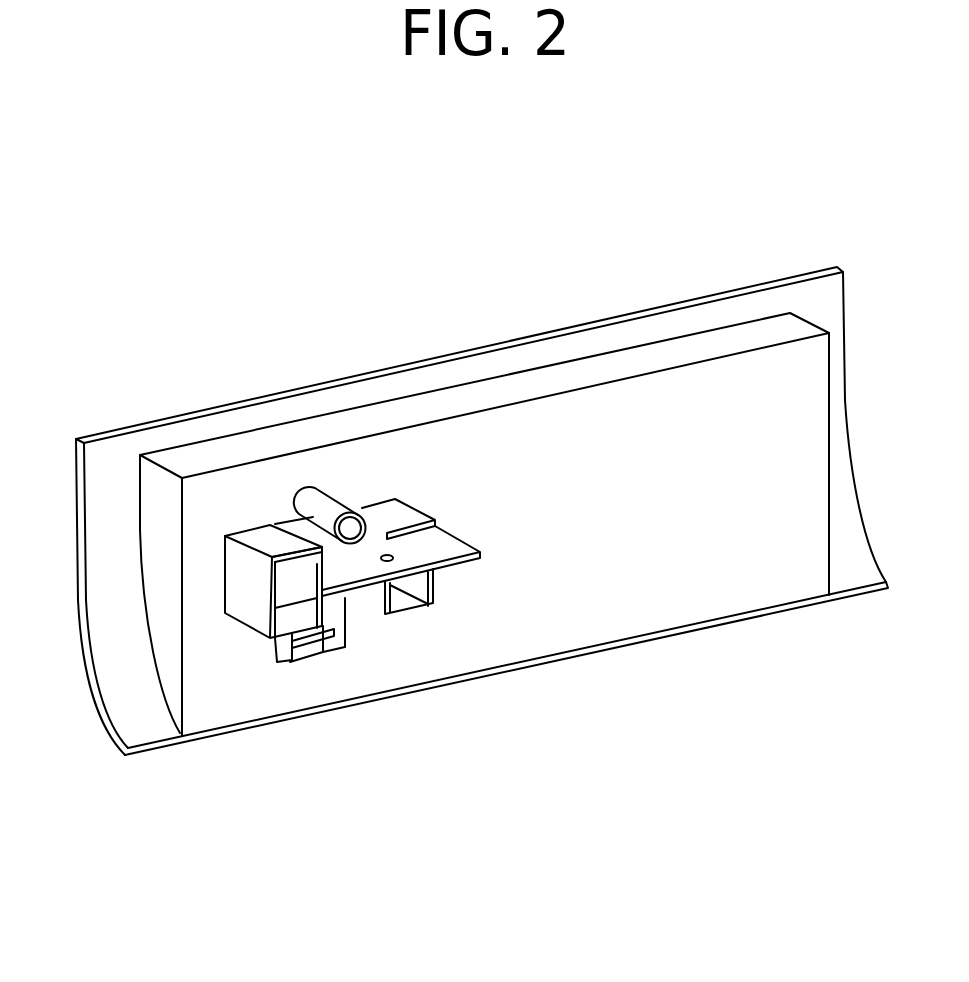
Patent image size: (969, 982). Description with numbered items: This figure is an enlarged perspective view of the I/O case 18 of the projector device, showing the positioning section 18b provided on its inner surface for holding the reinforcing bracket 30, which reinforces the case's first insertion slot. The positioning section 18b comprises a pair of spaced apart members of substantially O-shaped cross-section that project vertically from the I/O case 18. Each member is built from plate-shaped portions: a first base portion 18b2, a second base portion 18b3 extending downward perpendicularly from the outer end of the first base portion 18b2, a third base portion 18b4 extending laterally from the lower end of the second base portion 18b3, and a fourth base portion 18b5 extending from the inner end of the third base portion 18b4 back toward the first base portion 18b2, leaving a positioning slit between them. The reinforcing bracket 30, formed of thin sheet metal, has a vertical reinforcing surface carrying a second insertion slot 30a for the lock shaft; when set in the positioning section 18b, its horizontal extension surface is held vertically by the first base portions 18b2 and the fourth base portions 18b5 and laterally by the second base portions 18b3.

The I/O case 18 is at (667, 318).
The positioning section 18b is at (222, 548).
The first substantially plate-shaped base portion 18b2 is at (378, 503).
The second substantially plate-shaped base portion 18b3 is at (240, 613).
The third substantially plate-shaped base portion 18b4 is at (290, 640).
The fourth substantially plate-shaped base portion 18b5 is at (373, 603).
The reinforcing bracket 30 is at (462, 555).
The second insertion slot 30a is at (323, 642).